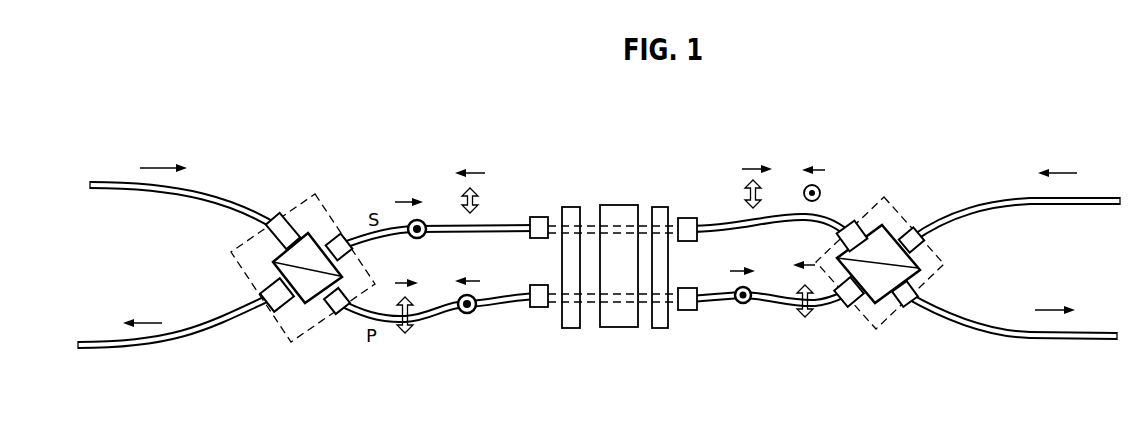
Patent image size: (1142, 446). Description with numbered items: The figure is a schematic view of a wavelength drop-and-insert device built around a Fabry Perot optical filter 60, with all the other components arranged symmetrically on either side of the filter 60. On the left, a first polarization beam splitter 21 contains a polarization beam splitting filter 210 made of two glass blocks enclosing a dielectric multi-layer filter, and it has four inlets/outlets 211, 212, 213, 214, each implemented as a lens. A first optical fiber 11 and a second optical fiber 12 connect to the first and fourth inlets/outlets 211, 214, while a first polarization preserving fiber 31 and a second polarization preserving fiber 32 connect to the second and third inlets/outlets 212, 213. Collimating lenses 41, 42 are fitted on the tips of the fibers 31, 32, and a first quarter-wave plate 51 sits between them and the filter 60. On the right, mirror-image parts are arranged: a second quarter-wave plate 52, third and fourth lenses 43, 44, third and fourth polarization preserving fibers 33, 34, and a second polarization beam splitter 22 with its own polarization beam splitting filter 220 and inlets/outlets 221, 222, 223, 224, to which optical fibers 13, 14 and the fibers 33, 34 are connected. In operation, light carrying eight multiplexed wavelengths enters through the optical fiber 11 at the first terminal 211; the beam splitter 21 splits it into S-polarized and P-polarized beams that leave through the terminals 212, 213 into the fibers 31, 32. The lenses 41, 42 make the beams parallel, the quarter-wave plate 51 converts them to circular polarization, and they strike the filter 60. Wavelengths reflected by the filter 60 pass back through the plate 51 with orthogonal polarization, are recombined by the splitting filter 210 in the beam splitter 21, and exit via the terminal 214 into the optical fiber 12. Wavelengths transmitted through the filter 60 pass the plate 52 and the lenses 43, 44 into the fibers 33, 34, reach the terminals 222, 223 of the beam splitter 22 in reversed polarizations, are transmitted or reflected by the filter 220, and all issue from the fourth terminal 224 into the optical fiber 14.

The first optical fiber 11 is at (118, 182).
The second optical fiber 12 is at (126, 348).
The third optical fiber 13 is at (1103, 196).
The fourth optical fiber 14 is at (1112, 343).
The first polarization beam splitter 21 is at (318, 193).
The second polarization beam splitter 22 is at (888, 197).
The polarization beam splitting filter 210 is at (309, 272).
The first inlet/outlet 211 is at (278, 226).
The second inlet/outlet 212 is at (338, 236).
The third inlet/outlet 213 is at (333, 306).
The fourth inlet/outlet 214 is at (272, 305).
The second polarization beam splitting filter 220 is at (880, 268).
The first inlet/outlet 221 is at (911, 228).
The second inlet/outlet 222 is at (852, 220).
The third inlet/outlet 223 is at (848, 300).
The fourth inlet/outlet 224 is at (901, 298).
The first polarization preserving fiber 31 is at (488, 224).
The second polarization preserving fiber 32 is at (436, 320).
The third polarization preserving fiber 33 is at (778, 217).
The fourth polarization preserving fiber 34 is at (785, 303).
The first collimating lens 41 is at (540, 217).
The second collimating lens 42 is at (539, 307).
The third lens 43 is at (688, 218).
The fourth lens 44 is at (684, 310).
The first quarter-wave plate 51 is at (570, 207).
The second quarter-wave plate 52 is at (662, 207).
The Fabry Perot optical filter 60 is at (618, 322).